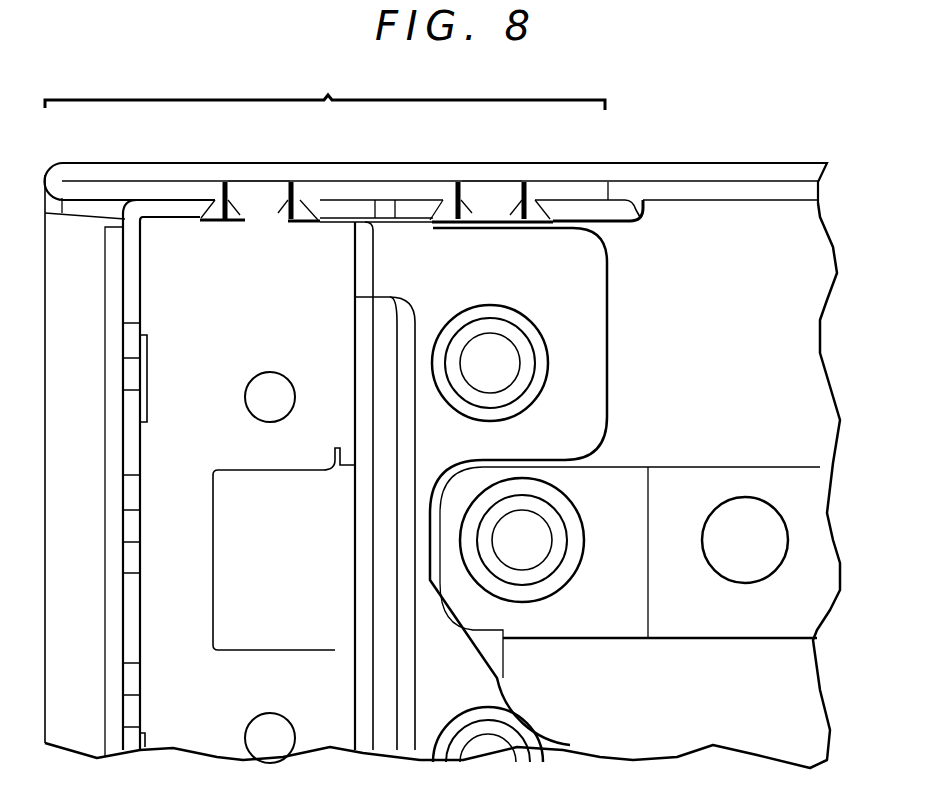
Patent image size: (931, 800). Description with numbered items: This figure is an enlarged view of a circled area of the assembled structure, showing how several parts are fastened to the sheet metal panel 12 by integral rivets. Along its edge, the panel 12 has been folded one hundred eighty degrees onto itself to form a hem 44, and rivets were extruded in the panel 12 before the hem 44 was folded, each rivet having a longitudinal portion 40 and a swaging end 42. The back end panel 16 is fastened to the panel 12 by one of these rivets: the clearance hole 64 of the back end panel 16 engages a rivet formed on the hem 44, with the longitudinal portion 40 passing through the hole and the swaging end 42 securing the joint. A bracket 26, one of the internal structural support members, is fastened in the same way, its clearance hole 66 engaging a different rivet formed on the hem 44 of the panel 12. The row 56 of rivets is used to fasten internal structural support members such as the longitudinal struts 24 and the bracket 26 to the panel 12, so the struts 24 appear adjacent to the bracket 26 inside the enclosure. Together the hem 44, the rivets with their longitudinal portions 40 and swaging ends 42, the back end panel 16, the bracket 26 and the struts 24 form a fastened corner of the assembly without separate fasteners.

The panel 12 is at (750, 170).
The back end panel 16 is at (167, 207).
The longitudinal strut 24 is at (710, 473).
The bracket 26 is at (711, 197).
The longitudinal portion 40 is at (237, 193).
The swaging end 42 is at (297, 218).
The hem 44 is at (325, 86).
The row of rivets 56 is at (563, 583).
The clearance hole 64 is at (270, 202).
The clearance hole 66 is at (482, 202).